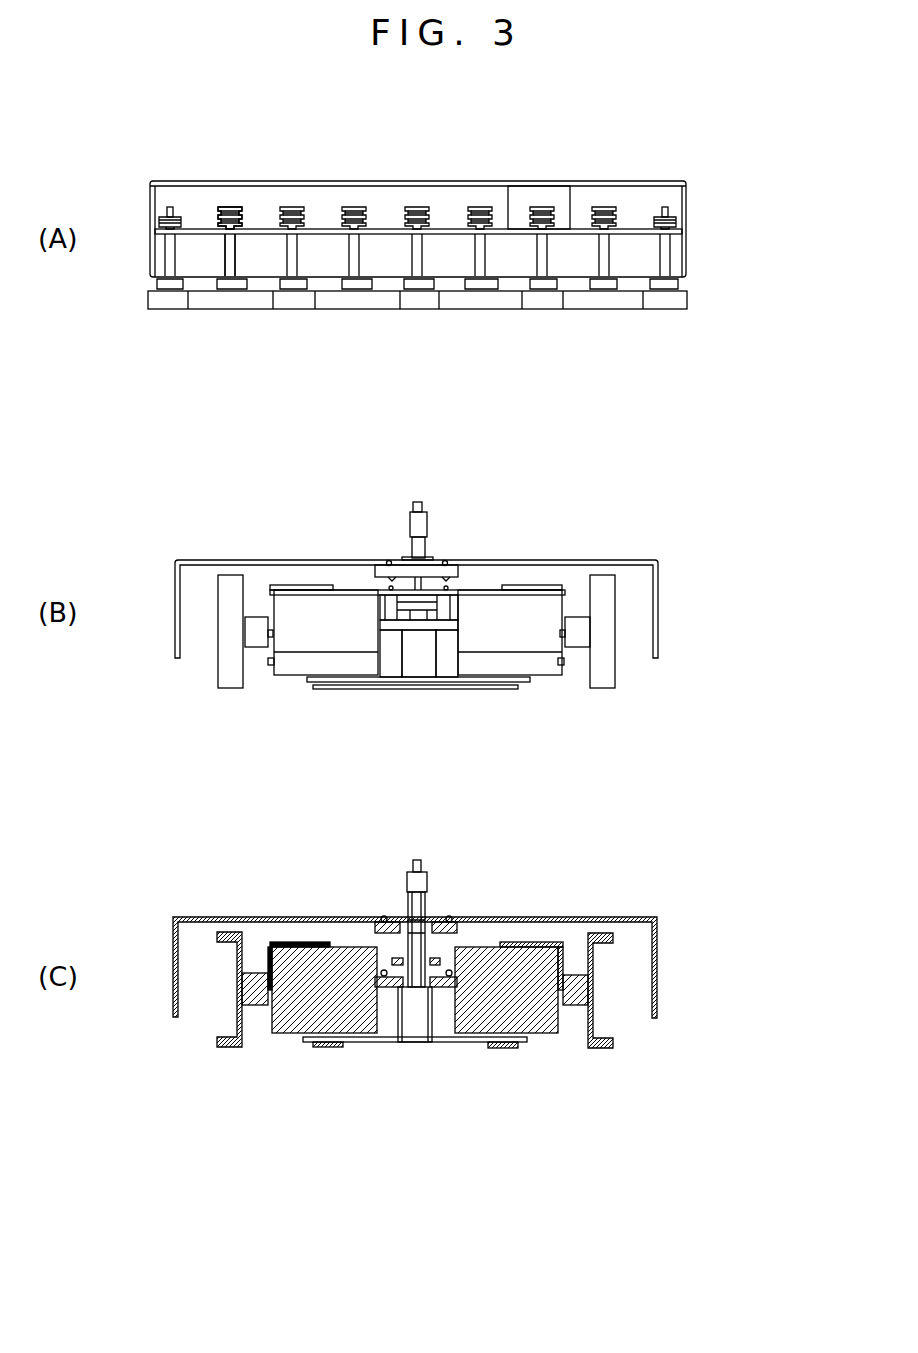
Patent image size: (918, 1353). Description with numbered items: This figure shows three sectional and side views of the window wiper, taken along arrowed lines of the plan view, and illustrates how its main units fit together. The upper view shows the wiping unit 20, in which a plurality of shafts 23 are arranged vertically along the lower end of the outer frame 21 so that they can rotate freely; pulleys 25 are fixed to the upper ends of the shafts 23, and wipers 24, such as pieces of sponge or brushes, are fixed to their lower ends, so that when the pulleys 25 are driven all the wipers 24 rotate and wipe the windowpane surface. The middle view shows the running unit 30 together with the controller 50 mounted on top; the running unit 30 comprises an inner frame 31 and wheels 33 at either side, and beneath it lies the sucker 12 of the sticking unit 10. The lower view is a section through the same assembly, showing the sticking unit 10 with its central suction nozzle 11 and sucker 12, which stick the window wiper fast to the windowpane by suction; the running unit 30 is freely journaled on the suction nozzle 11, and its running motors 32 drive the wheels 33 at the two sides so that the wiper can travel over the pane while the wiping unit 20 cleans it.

The sticking unit 10 is at (397, 1060).
The suction nozzle 11 is at (420, 905).
The sucker 12 is at (339, 690).
The wiping unit 20 is at (773, 98).
The outer frame 21 is at (657, 579).
The shaft 23 is at (232, 252).
The wiper 24 is at (229, 300).
The pulley 25 is at (240, 213).
The running unit 30 is at (635, 680).
The inner frame 31 is at (538, 588).
The running motor 32 is at (293, 1022).
The wheel 33 is at (228, 632).
The controller 50 is at (369, 583).